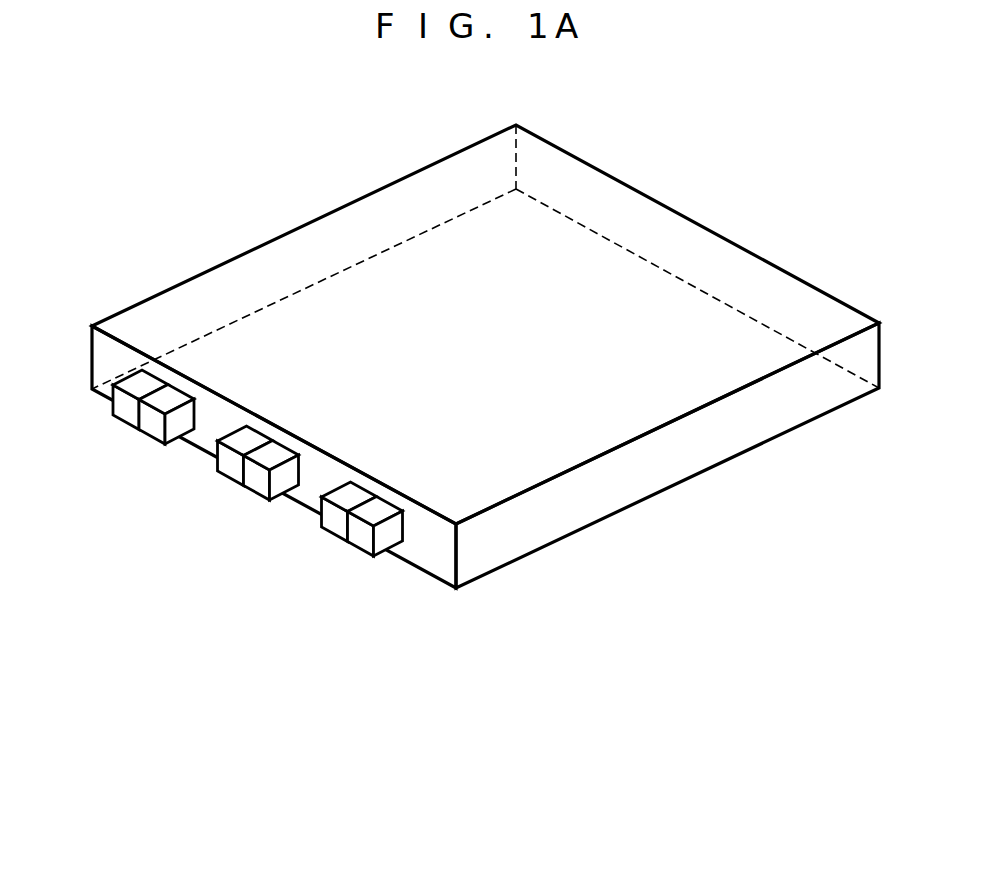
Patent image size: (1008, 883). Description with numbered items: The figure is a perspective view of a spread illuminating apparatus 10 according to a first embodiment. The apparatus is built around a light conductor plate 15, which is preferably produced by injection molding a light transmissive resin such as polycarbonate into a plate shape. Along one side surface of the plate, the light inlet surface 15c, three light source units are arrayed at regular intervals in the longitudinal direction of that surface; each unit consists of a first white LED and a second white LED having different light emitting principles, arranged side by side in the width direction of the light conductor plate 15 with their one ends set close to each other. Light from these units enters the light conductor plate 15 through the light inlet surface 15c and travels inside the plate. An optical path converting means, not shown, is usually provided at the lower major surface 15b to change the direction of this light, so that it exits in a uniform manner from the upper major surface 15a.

The spread illuminating apparatus 10 is at (364, 638).
The light conductor plate 15 is at (485, 403).
The upper major surface 15a is at (552, 447).
The lower major surface 15b is at (327, 308).
The light inlet surface 15c is at (440, 553).